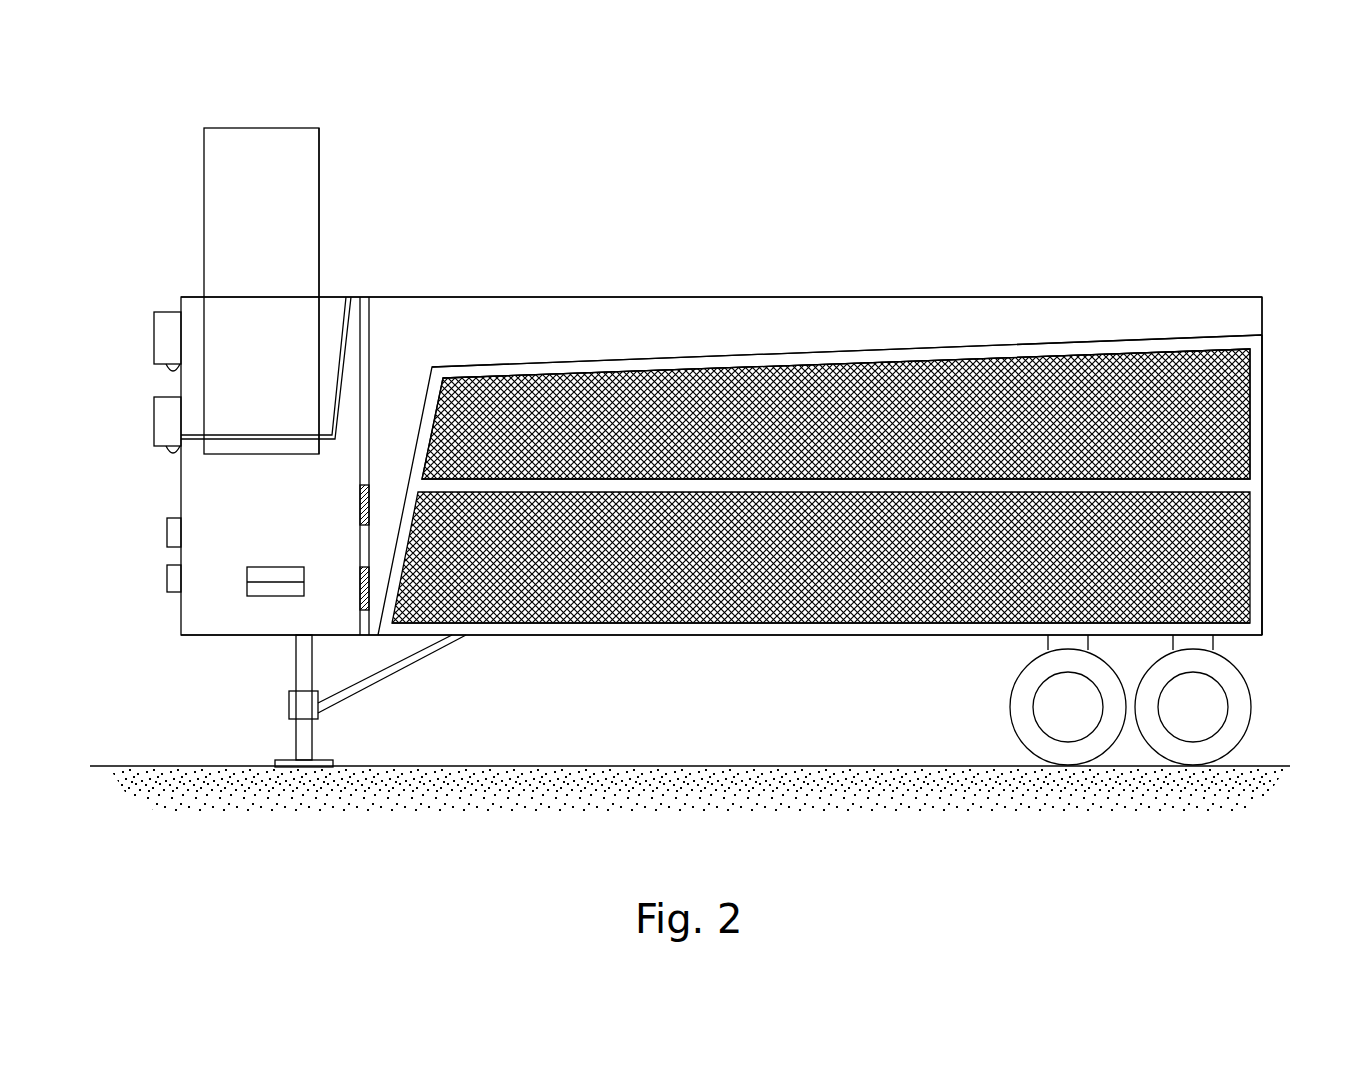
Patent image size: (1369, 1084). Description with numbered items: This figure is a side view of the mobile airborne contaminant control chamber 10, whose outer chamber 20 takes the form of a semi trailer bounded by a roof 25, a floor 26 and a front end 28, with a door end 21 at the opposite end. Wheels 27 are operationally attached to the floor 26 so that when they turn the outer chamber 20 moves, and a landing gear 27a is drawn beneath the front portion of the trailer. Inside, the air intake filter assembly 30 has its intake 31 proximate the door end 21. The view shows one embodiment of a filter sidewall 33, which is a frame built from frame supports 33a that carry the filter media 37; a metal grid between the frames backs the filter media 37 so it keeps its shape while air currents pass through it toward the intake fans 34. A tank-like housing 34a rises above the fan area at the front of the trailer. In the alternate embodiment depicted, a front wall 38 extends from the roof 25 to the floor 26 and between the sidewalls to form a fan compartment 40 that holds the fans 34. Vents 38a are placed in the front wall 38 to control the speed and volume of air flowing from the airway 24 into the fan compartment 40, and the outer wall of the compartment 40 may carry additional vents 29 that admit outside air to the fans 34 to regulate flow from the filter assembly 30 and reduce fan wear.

The mobile airborne contaminant control chamber 10 is at (1153, 125).
The outer chamber 20 is at (915, 298).
The door end 21 is at (1268, 422).
The airway 24 is at (541, 325).
The roof 25 is at (672, 297).
The floor 26 is at (745, 635).
The wheels 27 is at (1155, 750).
The landing gear 27a is at (295, 675).
The front end 28 is at (180, 603).
The vents 29 is at (247, 592).
The air intake filter assembly 30 is at (1165, 335).
The intake 31 is at (1268, 368).
The side filter 33 is at (1094, 400).
The frames 33a is at (1015, 348).
The intake fans 34 is at (230, 335).
The tank side 34a is at (319, 190).
The filter media 37 is at (812, 390).
The front wall 38 is at (443, 310).
The vents 38a is at (363, 570).
The fan compartment 40 is at (247, 538).